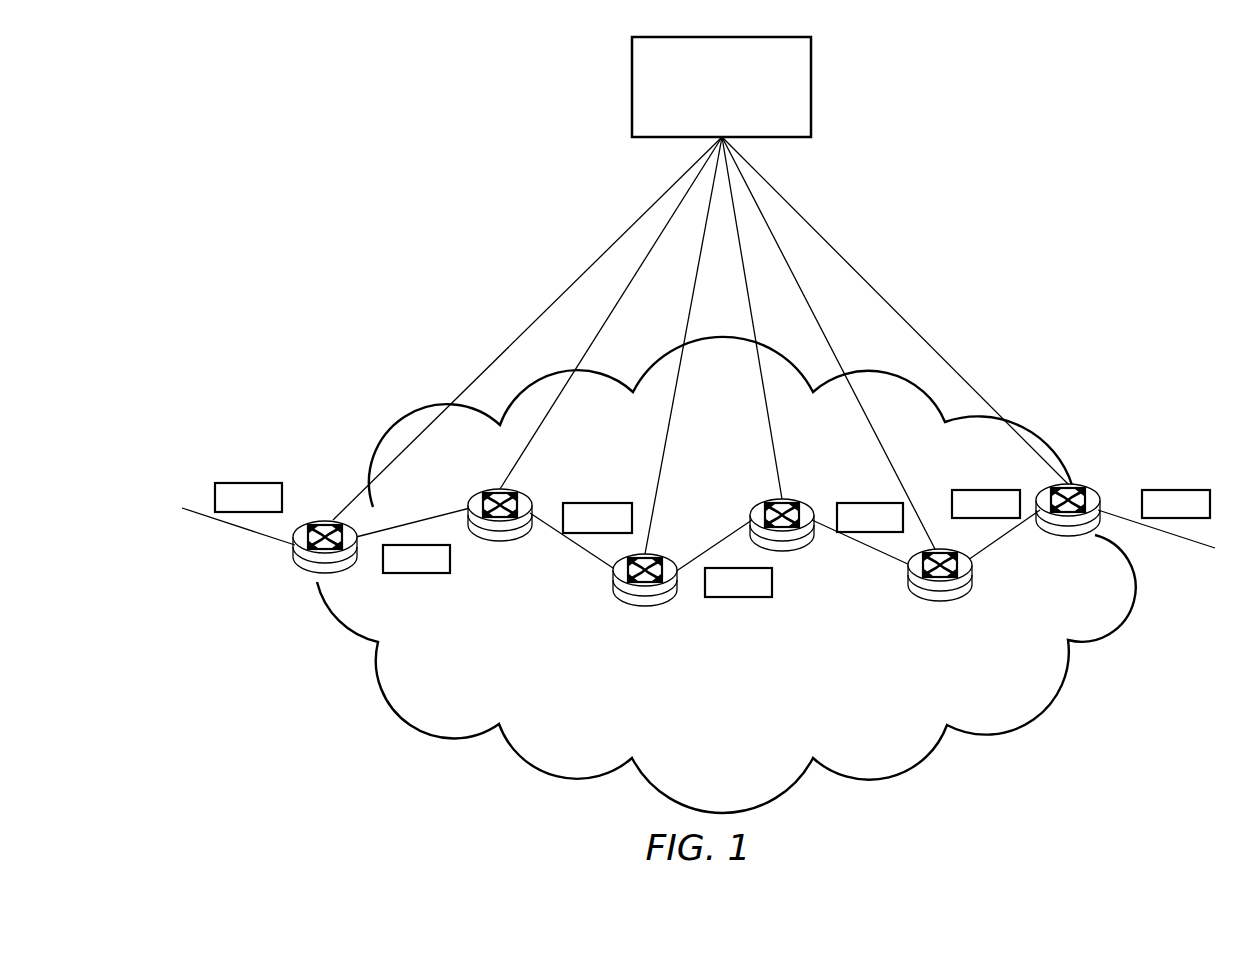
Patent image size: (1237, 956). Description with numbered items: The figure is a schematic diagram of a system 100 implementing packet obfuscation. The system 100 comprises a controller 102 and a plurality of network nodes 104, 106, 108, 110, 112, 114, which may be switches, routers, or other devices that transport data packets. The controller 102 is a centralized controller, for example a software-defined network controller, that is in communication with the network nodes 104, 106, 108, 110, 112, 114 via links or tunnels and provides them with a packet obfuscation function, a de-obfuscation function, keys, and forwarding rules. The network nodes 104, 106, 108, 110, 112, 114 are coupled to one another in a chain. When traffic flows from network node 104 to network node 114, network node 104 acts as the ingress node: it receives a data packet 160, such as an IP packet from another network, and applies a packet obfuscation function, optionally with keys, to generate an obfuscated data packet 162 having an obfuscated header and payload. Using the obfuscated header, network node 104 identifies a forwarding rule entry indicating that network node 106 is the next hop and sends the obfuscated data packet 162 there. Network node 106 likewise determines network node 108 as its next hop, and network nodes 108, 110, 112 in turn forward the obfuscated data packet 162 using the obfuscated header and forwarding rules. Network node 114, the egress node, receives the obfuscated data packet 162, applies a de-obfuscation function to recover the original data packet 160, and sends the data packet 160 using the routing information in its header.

The system 100 is at (250, 148).
The controller 102 is at (707, 110).
The network node 104 is at (305, 572).
The network node 106 is at (505, 545).
The network node 108 is at (640, 610).
The network node 110 is at (790, 552).
The network node 112 is at (945, 604).
The network node 114 is at (1062, 540).
The data packet 160 is at (246, 483).
The obfuscated data packet 162 is at (415, 573).